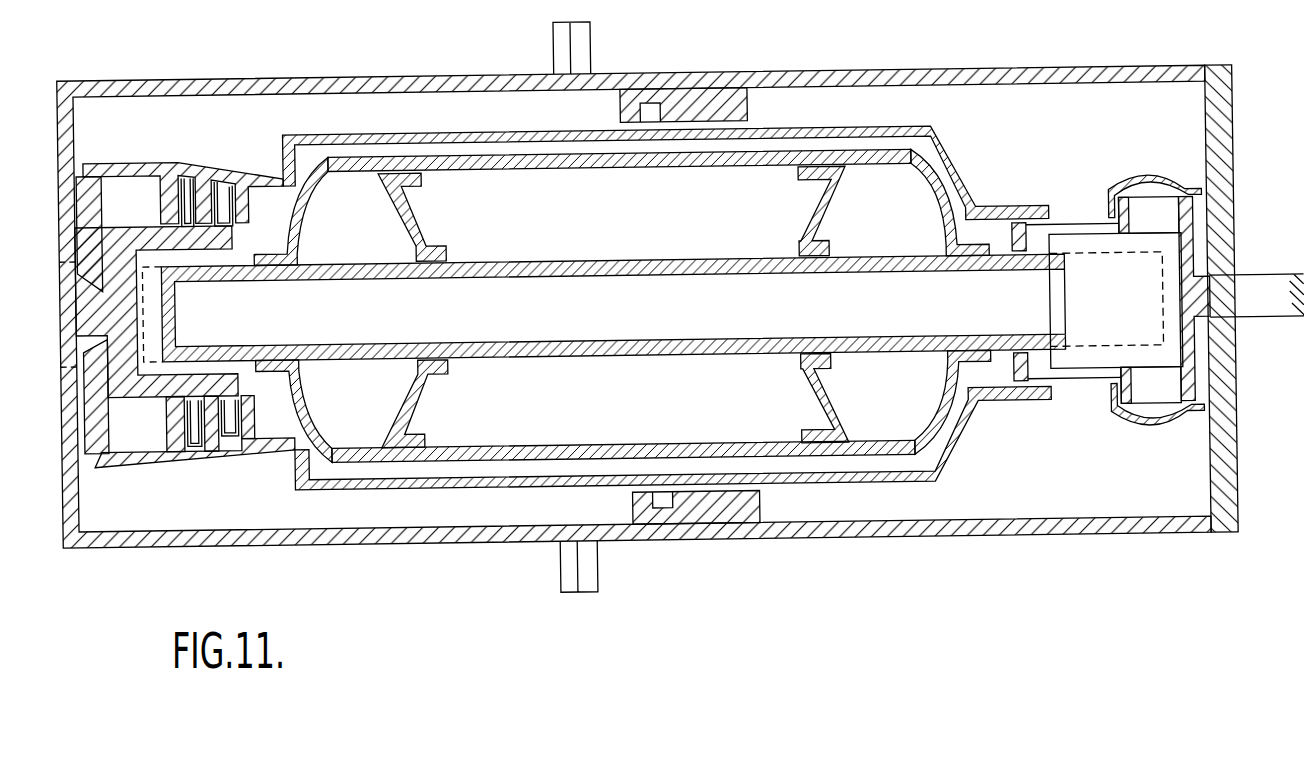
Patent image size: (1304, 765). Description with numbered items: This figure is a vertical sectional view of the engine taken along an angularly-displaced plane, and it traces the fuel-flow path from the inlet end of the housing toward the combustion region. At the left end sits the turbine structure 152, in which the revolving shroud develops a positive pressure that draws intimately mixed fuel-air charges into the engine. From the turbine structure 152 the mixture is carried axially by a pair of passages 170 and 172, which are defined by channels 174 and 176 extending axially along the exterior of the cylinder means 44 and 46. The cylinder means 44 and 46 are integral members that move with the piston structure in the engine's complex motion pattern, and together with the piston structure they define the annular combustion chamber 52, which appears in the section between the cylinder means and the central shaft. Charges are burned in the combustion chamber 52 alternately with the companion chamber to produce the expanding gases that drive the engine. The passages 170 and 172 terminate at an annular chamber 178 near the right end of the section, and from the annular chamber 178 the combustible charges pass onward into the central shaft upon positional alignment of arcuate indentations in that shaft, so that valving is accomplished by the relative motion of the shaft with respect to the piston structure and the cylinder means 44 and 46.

The cylinder means 44 is at (478, 155).
The cylinder means 46 is at (824, 155).
The annular combustion chamber 52 is at (624, 406).
The turbine structure 152 is at (191, 174).
The passage 170 is at (619, 152).
The passage 172 is at (623, 460).
The channel 174 is at (322, 130).
The channel 176 is at (367, 484).
The annular chamber 178 is at (1041, 304).